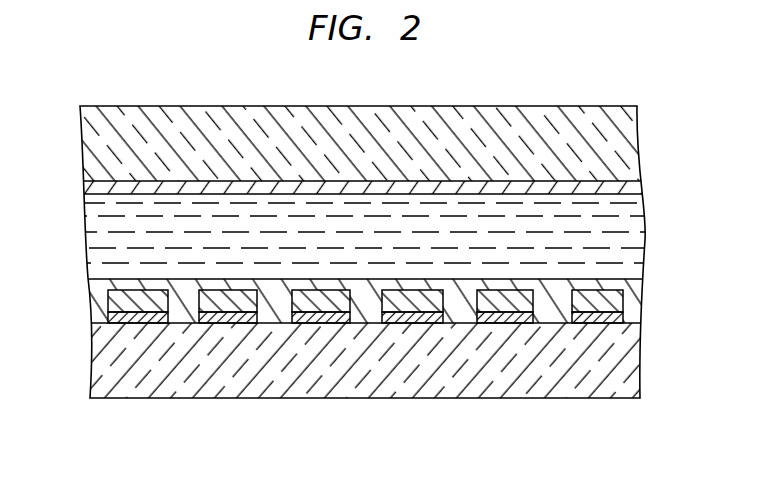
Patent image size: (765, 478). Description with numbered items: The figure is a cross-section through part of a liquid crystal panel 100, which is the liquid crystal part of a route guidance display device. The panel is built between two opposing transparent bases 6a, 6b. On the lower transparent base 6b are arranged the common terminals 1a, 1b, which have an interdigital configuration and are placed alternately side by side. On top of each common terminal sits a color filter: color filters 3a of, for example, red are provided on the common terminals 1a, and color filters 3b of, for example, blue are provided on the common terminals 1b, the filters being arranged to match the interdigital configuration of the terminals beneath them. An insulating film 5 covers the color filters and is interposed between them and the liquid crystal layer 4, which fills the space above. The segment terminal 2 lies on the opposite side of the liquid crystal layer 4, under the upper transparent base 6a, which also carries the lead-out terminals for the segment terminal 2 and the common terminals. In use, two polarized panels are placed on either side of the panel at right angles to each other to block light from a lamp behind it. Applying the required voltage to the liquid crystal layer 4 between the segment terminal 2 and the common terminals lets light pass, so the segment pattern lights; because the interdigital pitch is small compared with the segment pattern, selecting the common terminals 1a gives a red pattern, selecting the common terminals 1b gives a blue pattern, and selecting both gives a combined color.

The liquid crystal panel 100 is at (399, 86).
The transparent base 6a is at (105, 151).
The segment terminal 2 is at (97, 188).
The liquid crystal layer 4 is at (100, 223).
The insulating film 5 is at (102, 297).
The transparent base 6b is at (105, 357).
The common terminal 1a is at (132, 316).
The common terminal 1b is at (250, 316).
The color filter 3a is at (154, 302).
The color filter 3b is at (219, 298).